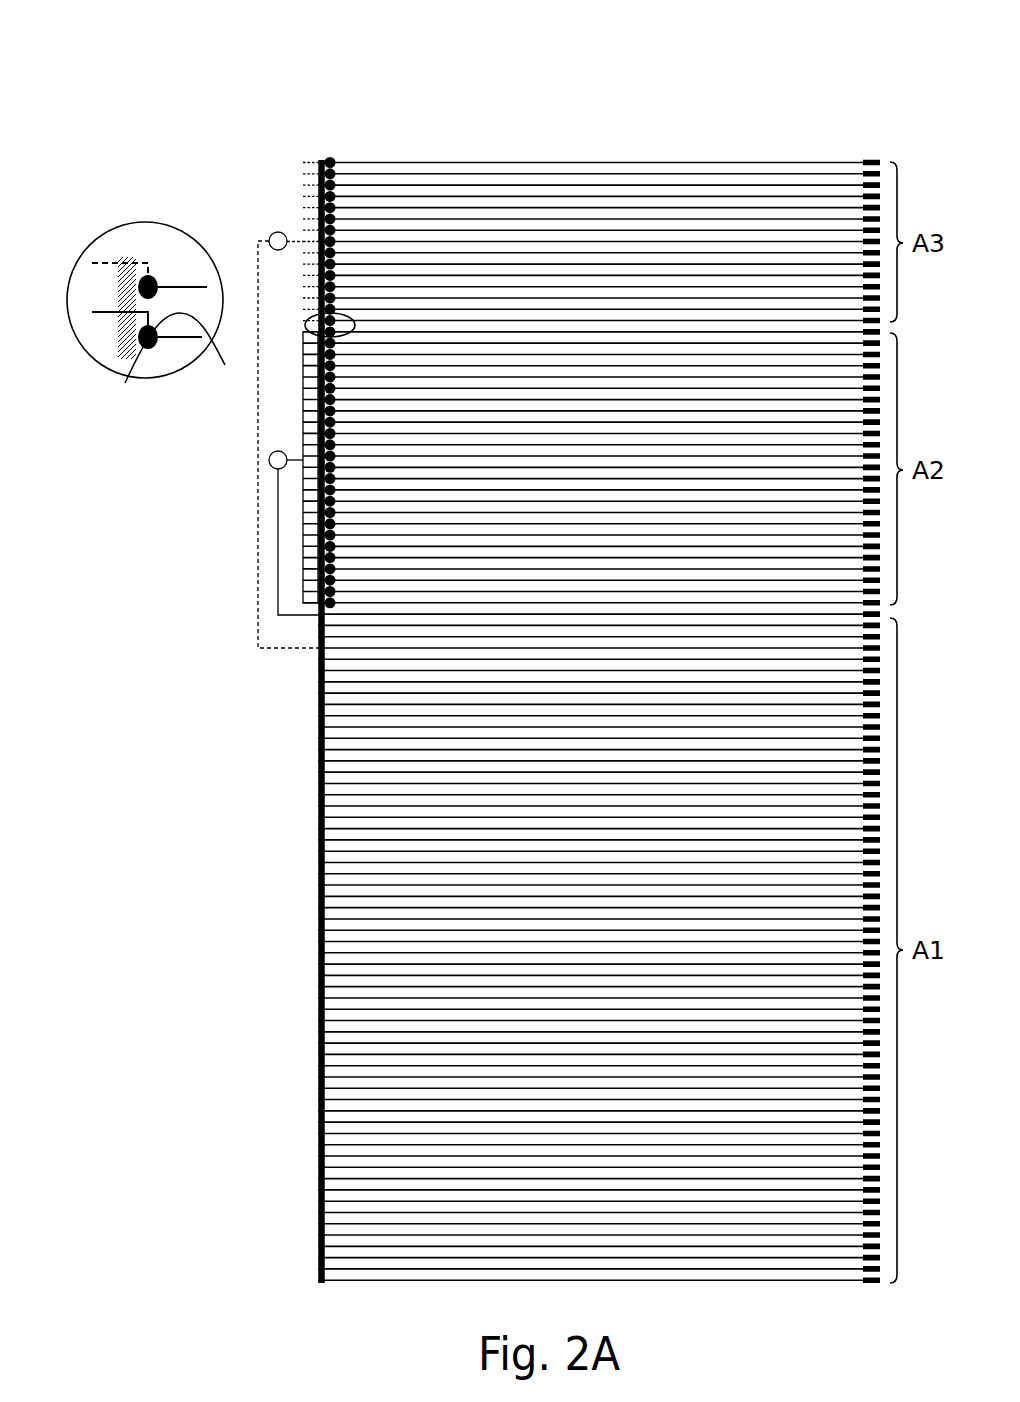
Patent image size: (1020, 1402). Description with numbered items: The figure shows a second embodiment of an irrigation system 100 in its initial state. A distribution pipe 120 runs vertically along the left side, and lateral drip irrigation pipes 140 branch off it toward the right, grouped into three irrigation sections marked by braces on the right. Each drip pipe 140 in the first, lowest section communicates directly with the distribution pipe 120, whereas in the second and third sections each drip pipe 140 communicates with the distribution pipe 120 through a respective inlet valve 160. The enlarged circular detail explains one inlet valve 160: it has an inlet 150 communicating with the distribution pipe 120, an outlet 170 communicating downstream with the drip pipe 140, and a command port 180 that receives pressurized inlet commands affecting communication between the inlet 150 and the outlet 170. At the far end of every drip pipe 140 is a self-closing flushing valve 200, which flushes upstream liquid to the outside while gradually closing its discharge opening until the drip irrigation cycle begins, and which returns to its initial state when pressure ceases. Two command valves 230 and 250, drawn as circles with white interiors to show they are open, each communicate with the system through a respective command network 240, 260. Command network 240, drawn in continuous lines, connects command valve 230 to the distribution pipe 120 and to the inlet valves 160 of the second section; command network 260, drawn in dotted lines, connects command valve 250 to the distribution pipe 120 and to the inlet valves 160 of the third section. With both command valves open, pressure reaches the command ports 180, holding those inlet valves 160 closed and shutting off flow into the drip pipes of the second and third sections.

The irrigation system 100 is at (817, 79).
The distribution pipe 120 is at (318, 978).
The lateral drip irrigation pipes 140 is at (608, 160).
The inlet 150 is at (122, 362).
The inlet valve 160 is at (332, 160).
The outlet 170 is at (160, 343).
The command port 180 is at (188, 352).
The flushing valve 200 is at (870, 155).
The command valve 230 is at (270, 458).
The command network 240 is at (305, 424).
The command valve 250 is at (283, 228).
The command network 260 is at (305, 190).